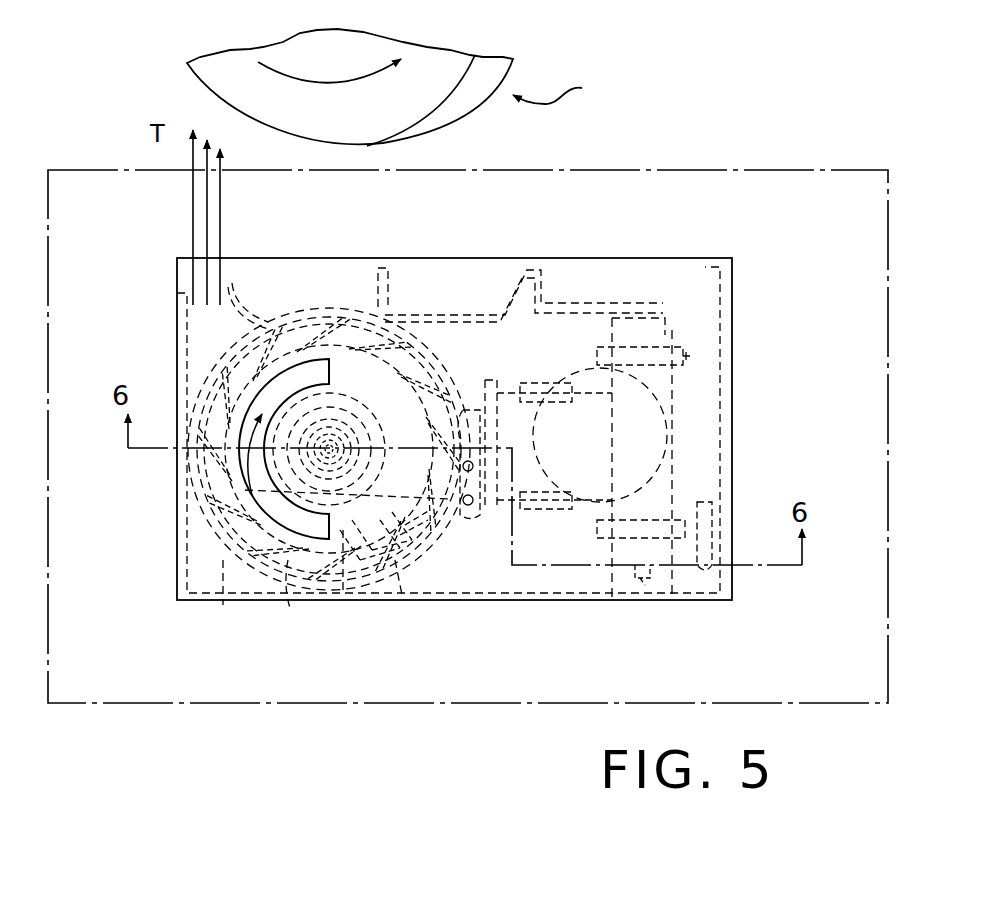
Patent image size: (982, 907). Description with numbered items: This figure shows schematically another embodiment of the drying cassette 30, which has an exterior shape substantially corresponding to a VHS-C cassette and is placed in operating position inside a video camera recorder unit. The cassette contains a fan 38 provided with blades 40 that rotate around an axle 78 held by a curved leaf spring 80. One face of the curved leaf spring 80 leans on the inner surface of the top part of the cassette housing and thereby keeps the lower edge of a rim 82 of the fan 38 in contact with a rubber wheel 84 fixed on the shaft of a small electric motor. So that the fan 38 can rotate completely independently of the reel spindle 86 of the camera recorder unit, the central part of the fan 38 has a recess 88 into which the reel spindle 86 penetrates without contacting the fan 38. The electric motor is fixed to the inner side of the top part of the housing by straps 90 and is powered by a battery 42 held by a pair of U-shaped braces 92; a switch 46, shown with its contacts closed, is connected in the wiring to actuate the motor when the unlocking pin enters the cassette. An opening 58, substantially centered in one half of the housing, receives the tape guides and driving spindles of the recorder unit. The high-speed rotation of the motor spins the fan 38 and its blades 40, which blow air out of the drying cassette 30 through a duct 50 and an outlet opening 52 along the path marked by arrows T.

The drying cassette 30 is at (653, 214).
The outlet duct 50 is at (199, 357).
The outlet opening 52 is at (228, 282).
The recess 88 is at (200, 497).
The reel spindle 86 is at (195, 524).
The fan blades 40 is at (291, 600).
The rim 82 is at (207, 596).
The axle 78 is at (349, 597).
The fan 38 is at (399, 600).
The curved leaf spring 80 is at (400, 543).
The rubber wheel 84 is at (453, 398).
The straps 90 is at (536, 395).
The opening 58 is at (656, 412).
The battery 42 is at (670, 328).
The U-shaped braces 92 is at (706, 361).
The switch 46 is at (713, 529).